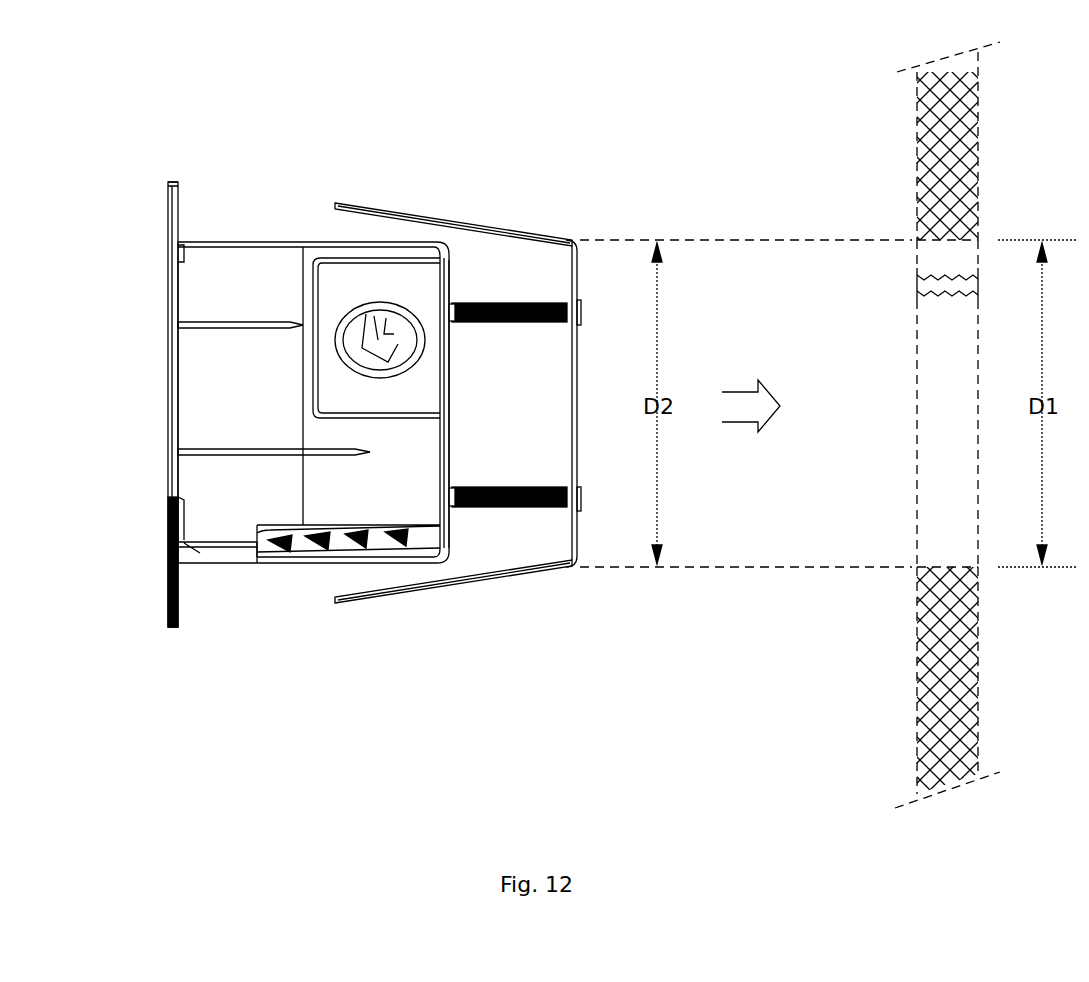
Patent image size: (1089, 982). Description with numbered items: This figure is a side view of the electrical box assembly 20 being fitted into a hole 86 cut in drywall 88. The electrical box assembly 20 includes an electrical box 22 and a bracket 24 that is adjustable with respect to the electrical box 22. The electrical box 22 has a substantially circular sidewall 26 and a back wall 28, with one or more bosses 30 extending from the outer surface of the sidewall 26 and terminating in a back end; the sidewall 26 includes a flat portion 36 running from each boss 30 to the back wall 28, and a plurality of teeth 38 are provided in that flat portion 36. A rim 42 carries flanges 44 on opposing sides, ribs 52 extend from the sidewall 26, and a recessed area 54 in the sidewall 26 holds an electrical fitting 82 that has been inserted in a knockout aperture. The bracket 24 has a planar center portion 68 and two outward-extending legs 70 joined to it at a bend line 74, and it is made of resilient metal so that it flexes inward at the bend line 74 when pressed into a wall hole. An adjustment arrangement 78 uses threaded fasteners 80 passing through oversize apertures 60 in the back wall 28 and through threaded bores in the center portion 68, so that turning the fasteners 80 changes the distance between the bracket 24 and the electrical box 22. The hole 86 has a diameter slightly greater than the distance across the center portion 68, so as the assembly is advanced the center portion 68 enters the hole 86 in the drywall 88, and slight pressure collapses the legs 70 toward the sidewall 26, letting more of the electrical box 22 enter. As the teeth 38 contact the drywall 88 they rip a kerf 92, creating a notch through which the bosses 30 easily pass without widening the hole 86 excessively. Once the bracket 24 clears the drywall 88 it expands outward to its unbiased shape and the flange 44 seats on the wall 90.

The electrical box assembly 20 is at (110, 232).
The electrical box 22 is at (262, 242).
The bracket 24 is at (453, 218).
The sidewall 26 is at (264, 386).
The back wall 28 is at (460, 398).
The bosses 30 is at (173, 518).
The flat portion 36 is at (305, 528).
The teeth 38 is at (330, 548).
The rim 42 is at (170, 380).
The flanges 44 is at (178, 222).
The ribs 52 is at (265, 453).
The recessed areas 54 is at (376, 338).
The apertures 60 is at (452, 310).
The center portion 68 is at (576, 355).
The legs 70 is at (410, 213).
The bend line 74 is at (575, 240).
The adjustment arrangement 78 is at (525, 352).
The threaded fasteners 80 is at (487, 316).
The electrical fitting 82 is at (372, 380).
The hole 86 is at (935, 472).
The drywall 88 is at (950, 120).
The wall 90 is at (917, 151).
The kerf 92 is at (917, 285).